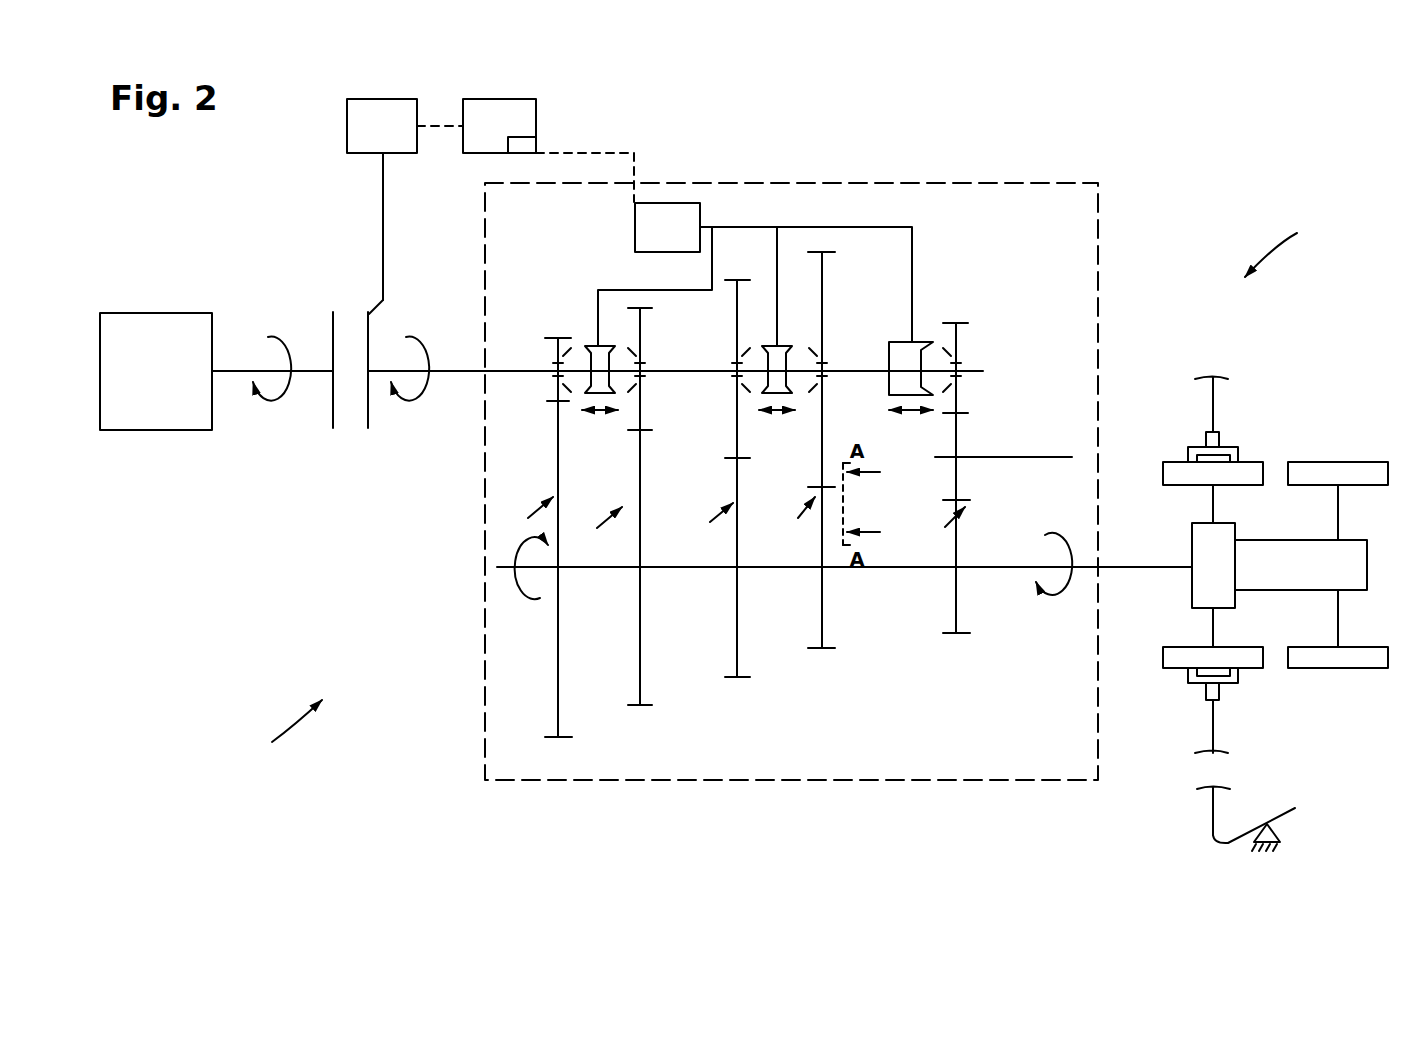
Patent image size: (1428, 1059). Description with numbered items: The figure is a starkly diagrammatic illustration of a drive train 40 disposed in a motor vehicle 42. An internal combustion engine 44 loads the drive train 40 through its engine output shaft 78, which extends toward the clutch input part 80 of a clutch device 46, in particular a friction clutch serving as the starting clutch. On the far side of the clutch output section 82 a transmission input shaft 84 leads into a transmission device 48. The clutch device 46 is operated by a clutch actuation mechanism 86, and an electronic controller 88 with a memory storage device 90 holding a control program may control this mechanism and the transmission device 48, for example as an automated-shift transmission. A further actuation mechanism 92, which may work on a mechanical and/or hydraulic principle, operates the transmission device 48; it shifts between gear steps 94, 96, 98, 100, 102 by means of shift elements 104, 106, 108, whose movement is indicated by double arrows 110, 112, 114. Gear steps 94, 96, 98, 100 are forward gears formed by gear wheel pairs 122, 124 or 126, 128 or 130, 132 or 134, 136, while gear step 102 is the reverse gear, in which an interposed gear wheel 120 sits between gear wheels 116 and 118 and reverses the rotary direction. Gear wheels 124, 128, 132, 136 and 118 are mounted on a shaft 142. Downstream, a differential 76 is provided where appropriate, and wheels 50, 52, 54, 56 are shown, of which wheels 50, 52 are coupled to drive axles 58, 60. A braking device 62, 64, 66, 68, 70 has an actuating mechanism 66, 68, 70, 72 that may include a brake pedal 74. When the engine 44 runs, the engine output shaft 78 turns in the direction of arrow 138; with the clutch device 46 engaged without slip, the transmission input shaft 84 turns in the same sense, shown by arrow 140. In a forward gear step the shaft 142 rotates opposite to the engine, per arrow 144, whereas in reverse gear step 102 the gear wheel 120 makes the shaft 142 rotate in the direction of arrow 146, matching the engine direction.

The drive train 40 is at (288, 735).
The motor vehicle 42 is at (1283, 243).
The internal combustion engine 44 is at (156, 318).
The clutch device 46 is at (327, 405).
The transmission device 48 is at (546, 762).
The wheel 50 is at (1177, 665).
The wheel 52 is at (1183, 476).
The wheel 54 is at (1338, 655).
The wheel 56 is at (1338, 470).
The drive axle 58 is at (1215, 503).
The drive axle 60 is at (1215, 626).
The braking device 62 is at (1240, 452).
The braking device 64 is at (1237, 678).
The actuating mechanism of the braking device 66 is at (1212, 402).
The actuating mechanism of the braking device 68 is at (1213, 735).
The actuating mechanism of the braking device 70 is at (1213, 810).
The actuating mechanism of the braking device 72 is at (1228, 845).
The brake pedal 74 is at (1295, 812).
The differential 76 is at (1200, 590).
The engine output shaft 78 is at (232, 370).
The clutch input part 80 is at (330, 332).
The clutch output section 82 is at (372, 327).
The transmission input shaft 84 is at (453, 373).
The clutch actuation mechanism 86 is at (355, 128).
The electronic controller 88 is at (499, 108).
The memory storage device 90 is at (522, 142).
The actuation mechanism 92 is at (669, 222).
The gear step 94 is at (525, 513).
The gear step 96 is at (602, 531).
The gear step 98 is at (711, 528).
The gear step 100 is at (795, 524).
The gear step 102 is at (933, 532).
The shift element 104 is at (590, 347).
The shift element 106 is at (784, 347).
The shift element 108 is at (901, 344).
The double arrow 110 is at (598, 414).
The double arrow 112 is at (778, 414).
The double arrow 114 is at (910, 414).
The gear wheel 116 is at (960, 391).
The gear wheel 118 is at (960, 527).
The gear wheel 120 is at (960, 478).
The gear wheel 122 is at (556, 392).
The gear wheel 124 is at (556, 471).
The gear wheel 126 is at (642, 335).
The gear wheel 128 is at (642, 494).
The gear wheel 130 is at (735, 408).
The gear wheel 132 is at (740, 494).
The gear wheel 134 is at (845, 490).
The gear wheel 136 is at (824, 611).
The arrow 138 is at (264, 404).
The arrow 140 is at (402, 404).
The shaft 142 is at (690, 570).
The arrow 144 is at (538, 600).
The arrow 146 is at (1052, 598).